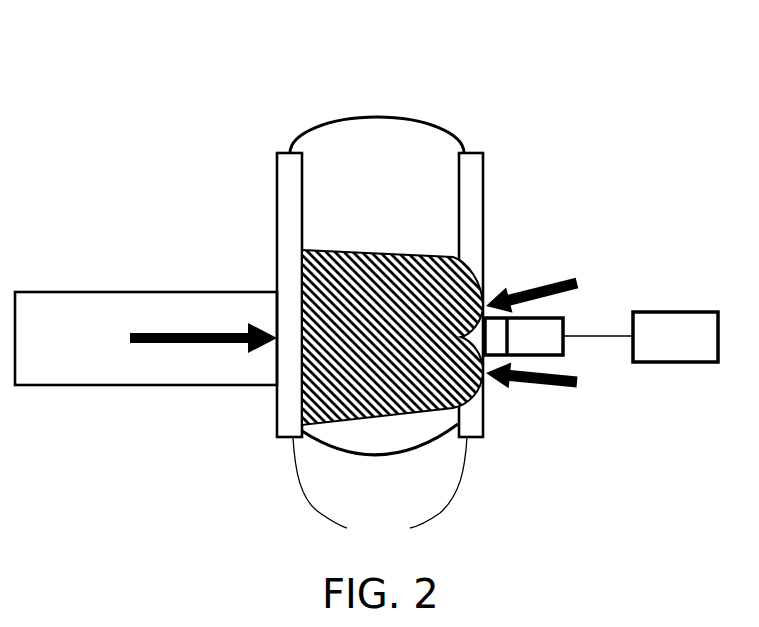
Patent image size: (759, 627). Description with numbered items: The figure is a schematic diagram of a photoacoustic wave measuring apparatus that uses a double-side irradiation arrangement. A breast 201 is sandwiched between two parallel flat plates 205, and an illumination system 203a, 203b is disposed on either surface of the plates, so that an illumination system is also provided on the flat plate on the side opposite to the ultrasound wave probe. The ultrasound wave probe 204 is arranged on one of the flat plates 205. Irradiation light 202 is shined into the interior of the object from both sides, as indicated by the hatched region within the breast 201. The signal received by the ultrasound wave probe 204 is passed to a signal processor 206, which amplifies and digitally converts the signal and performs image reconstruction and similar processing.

The breast 201 is at (400, 152).
The irradiation light 202 is at (378, 257).
The illumination system 203a is at (578, 281).
The illumination system 203b is at (80, 292).
The ultrasound wave probe 204 is at (553, 315).
The parallel flat plates 205 is at (380, 489).
The signal processor 206 is at (640, 337).